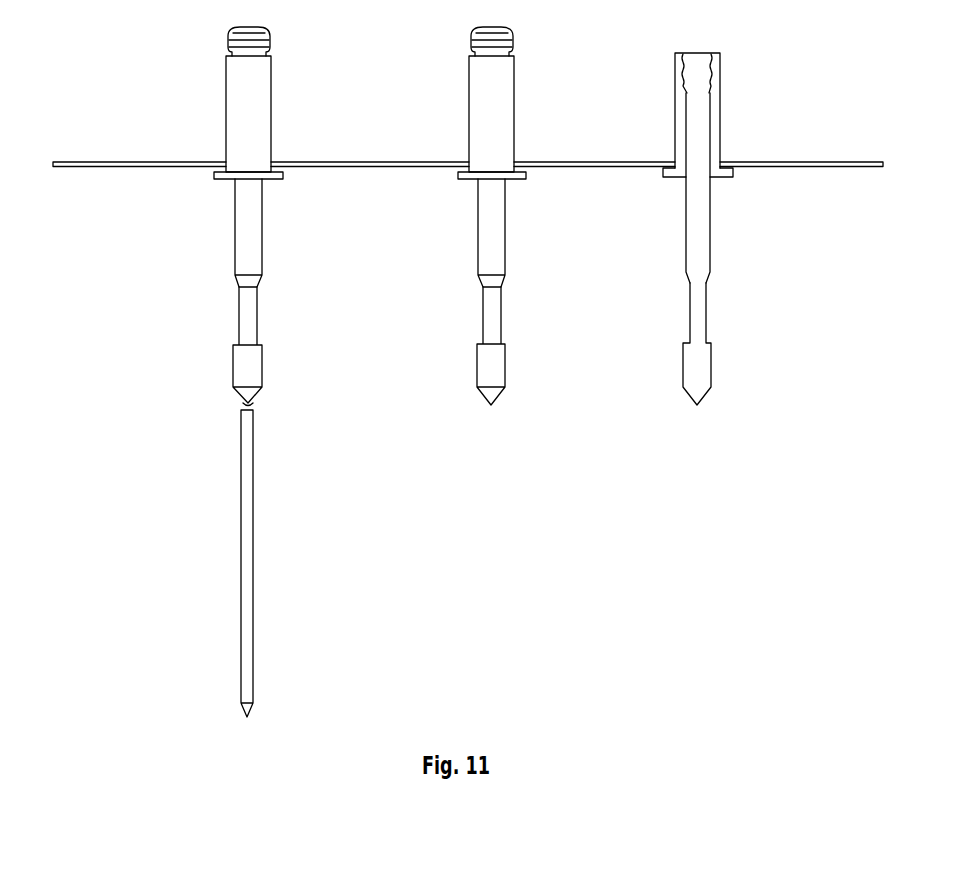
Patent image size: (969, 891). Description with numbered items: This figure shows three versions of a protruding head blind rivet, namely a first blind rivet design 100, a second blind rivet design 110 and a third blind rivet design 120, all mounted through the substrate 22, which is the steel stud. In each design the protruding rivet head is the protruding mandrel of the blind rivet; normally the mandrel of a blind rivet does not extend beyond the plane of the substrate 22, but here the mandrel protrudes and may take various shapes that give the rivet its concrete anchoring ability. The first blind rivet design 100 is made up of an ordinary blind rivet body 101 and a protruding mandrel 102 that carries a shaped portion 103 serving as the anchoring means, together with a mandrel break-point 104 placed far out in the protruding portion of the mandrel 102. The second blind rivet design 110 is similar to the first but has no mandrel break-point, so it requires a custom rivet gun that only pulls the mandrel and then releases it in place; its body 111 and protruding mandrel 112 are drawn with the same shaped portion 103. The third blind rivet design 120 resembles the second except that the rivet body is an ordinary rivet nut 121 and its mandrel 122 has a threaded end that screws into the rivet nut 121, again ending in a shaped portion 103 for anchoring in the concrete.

The substrate 22 is at (118, 167).
The first blind rivet design 100 is at (256, 368).
The blind rivet body 101 is at (255, 100).
The protruding mandrel 102 is at (246, 253).
The shaped portion 103 is at (257, 317).
The mandrel break-point 104 is at (243, 405).
The second blind rivet design 110 is at (494, 325).
The probe body with cap 111 is at (502, 98).
The upper stem 112 is at (490, 230).
The third blind rivet design 120 is at (752, 332).
The rivet nut 121 is at (717, 73).
The mandrel 122 is at (703, 222).